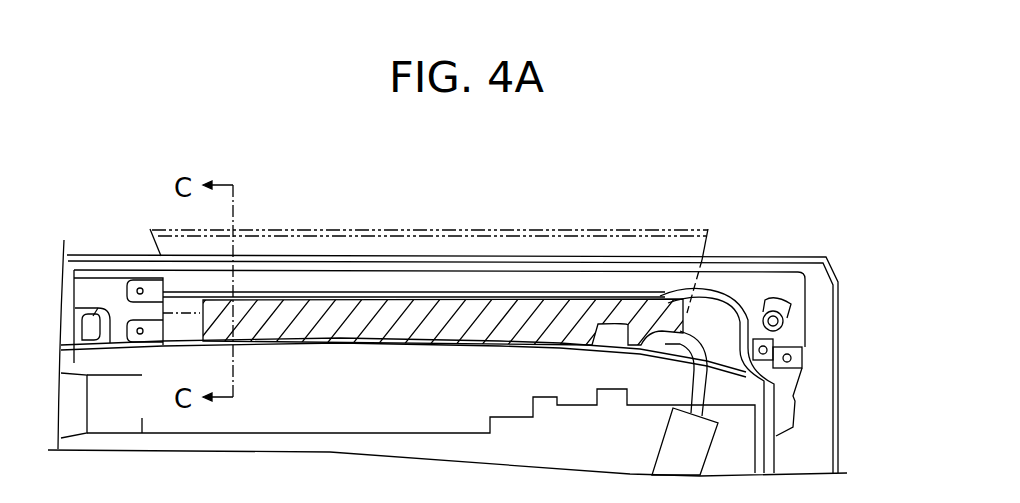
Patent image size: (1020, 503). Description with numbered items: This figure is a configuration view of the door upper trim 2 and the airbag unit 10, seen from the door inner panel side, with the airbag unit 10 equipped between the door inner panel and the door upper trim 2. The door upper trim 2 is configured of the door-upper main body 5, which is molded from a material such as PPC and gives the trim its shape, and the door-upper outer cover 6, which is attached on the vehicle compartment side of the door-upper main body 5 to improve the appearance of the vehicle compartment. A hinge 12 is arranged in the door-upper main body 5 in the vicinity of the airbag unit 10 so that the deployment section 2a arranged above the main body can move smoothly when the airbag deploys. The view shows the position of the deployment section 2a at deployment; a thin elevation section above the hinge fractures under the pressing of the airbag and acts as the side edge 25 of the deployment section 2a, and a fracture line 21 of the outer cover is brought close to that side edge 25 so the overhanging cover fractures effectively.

The door upper trim 2 is at (849, 306).
The deployment section 2a is at (579, 246).
The door-upper main body 5 is at (814, 360).
The door-upper outer cover 6 is at (836, 263).
The airbag unit 10 is at (531, 335).
The hinge 12 is at (180, 320).
The fracture line 21 is at (148, 229).
The side edge 25 is at (710, 252).